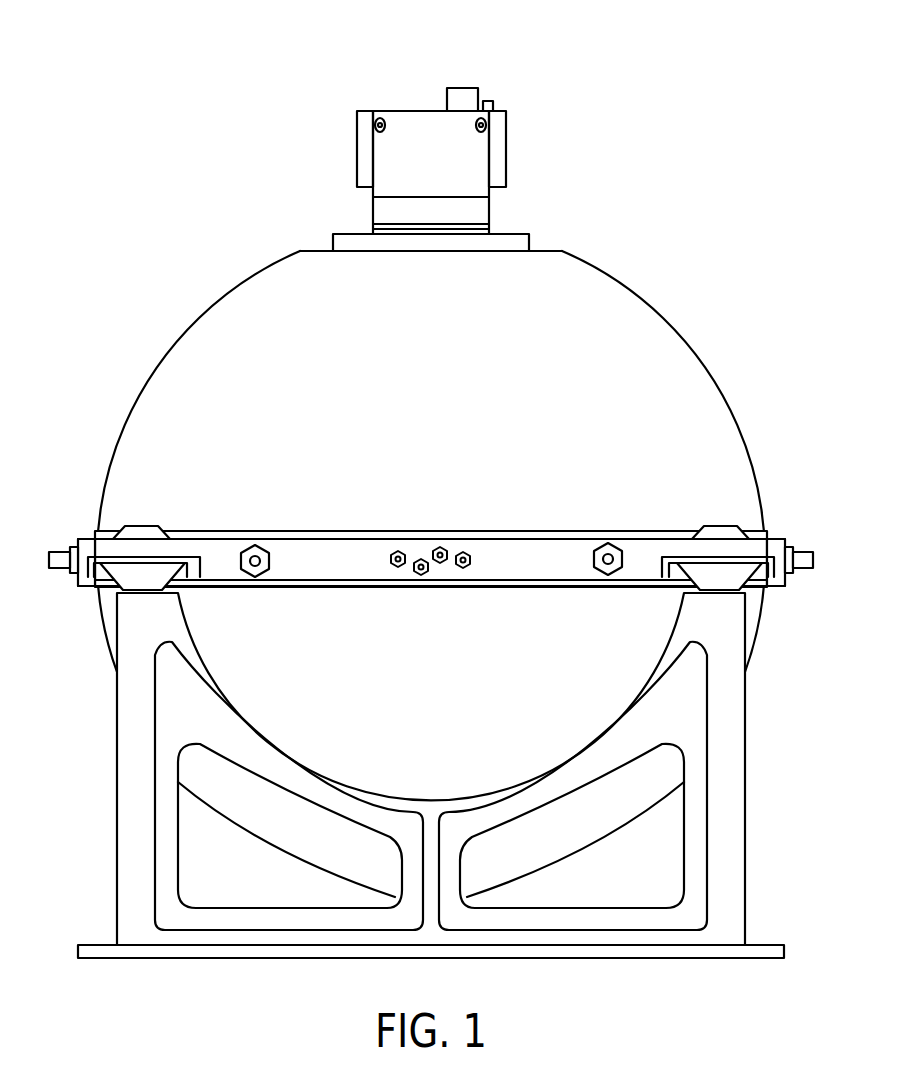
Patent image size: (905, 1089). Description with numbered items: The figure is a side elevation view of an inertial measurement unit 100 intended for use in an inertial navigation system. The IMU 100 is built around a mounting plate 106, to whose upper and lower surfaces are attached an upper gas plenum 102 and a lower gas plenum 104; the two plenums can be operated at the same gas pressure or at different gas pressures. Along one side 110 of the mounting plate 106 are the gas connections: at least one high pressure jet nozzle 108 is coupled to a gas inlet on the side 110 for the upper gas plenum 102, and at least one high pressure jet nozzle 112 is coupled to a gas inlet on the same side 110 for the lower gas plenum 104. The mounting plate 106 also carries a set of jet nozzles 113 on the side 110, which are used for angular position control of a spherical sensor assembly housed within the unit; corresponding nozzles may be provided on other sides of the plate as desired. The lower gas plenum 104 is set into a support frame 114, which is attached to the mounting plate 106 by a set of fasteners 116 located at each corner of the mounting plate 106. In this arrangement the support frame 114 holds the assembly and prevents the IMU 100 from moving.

The inertial measurement unit 100 is at (170, 232).
The upper gas plenum 102 is at (700, 358).
The lower gas plenum 104 is at (270, 857).
The mounting plate 106 is at (95, 553).
The high pressure jet nozzle 108 is at (258, 552).
The side of mounting plate 110 is at (522, 560).
The high pressure jet nozzle 112 is at (608, 570).
The jet nozzles 113 is at (399, 553).
The support frame 114 is at (132, 830).
The fasteners 116 is at (742, 532).